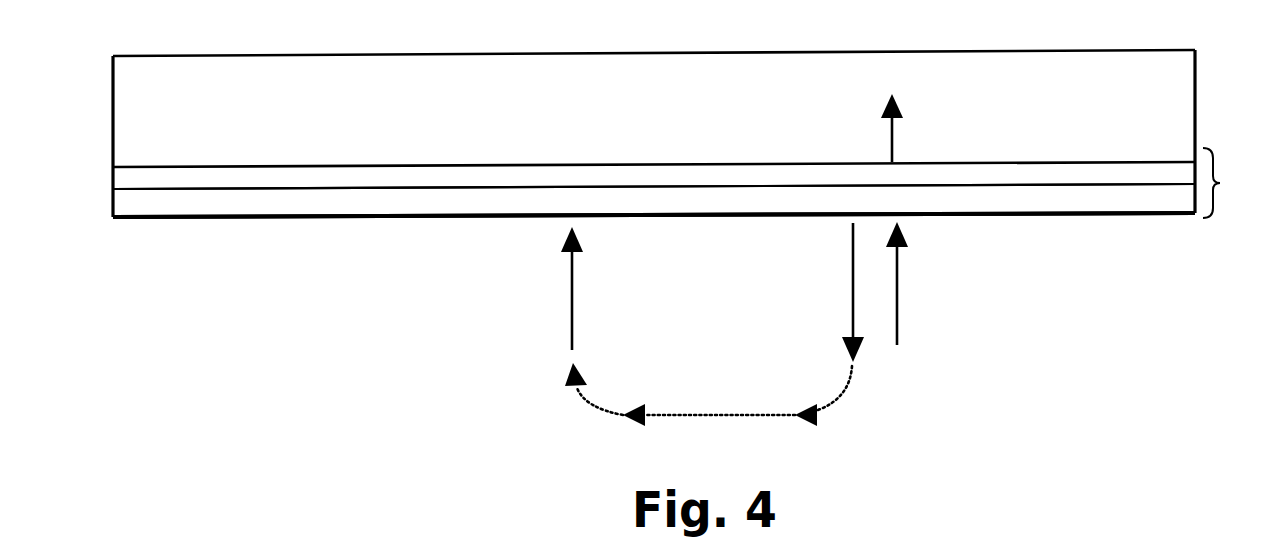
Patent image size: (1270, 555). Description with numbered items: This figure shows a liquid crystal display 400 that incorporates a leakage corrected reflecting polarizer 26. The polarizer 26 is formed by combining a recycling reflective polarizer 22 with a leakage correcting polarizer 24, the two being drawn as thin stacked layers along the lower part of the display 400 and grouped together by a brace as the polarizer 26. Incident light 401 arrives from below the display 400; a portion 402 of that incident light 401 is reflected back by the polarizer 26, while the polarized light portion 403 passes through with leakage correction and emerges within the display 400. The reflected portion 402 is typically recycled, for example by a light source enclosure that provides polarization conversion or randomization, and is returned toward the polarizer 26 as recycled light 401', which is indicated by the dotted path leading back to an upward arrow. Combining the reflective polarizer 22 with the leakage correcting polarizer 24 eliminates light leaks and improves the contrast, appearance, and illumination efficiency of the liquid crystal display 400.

The liquid crystal display 400 is at (298, 78).
The leakage correcting polarizer 24 is at (128, 177).
The recycling reflective polarizer 22 is at (143, 200).
The leakage corrected reflecting polarizer 26 is at (1229, 183).
The polarized light portion 403 is at (892, 143).
The incident light 401 is at (933, 283).
The recycled light 401' is at (526, 288).
The reflected portion 402 is at (853, 307).